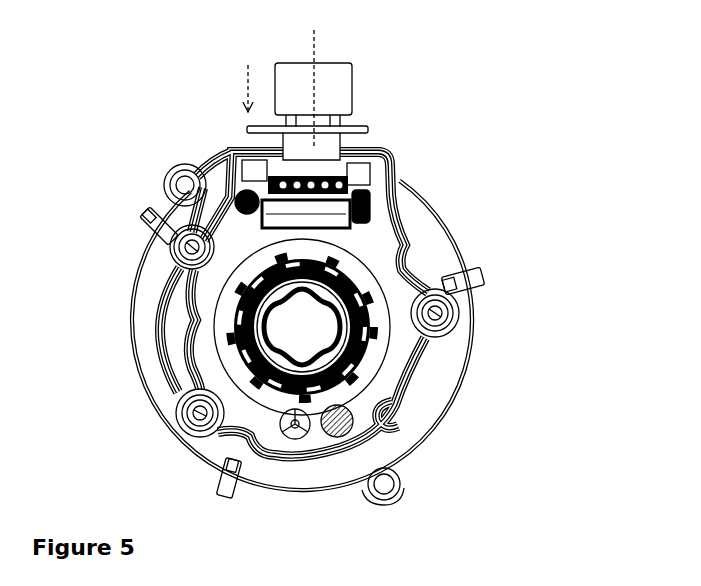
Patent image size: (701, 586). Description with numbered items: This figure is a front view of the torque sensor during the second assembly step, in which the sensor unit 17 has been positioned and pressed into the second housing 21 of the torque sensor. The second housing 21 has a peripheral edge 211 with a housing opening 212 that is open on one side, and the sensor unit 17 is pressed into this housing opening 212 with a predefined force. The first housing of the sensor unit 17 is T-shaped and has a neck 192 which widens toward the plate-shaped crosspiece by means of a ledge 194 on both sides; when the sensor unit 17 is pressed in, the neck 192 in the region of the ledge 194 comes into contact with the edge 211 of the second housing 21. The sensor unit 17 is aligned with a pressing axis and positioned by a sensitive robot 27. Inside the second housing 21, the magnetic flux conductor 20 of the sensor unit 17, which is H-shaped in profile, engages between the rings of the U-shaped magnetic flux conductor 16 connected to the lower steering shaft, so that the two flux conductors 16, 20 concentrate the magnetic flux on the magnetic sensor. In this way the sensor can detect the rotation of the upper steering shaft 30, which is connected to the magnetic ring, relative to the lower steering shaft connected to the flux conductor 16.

The sensor unit 17 is at (213, 98).
The neck 192 is at (318, 76).
The sensitive robot 27 is at (345, 78).
The ledge 194 is at (340, 143).
The housing opening 212 is at (237, 147).
The edge 211 is at (383, 155).
The second housing 21 is at (390, 178).
The magnetic flux conductor 20 is at (300, 226).
The magnetic flux conductor 16 is at (372, 334).
The upper steering shaft 30 is at (308, 333).